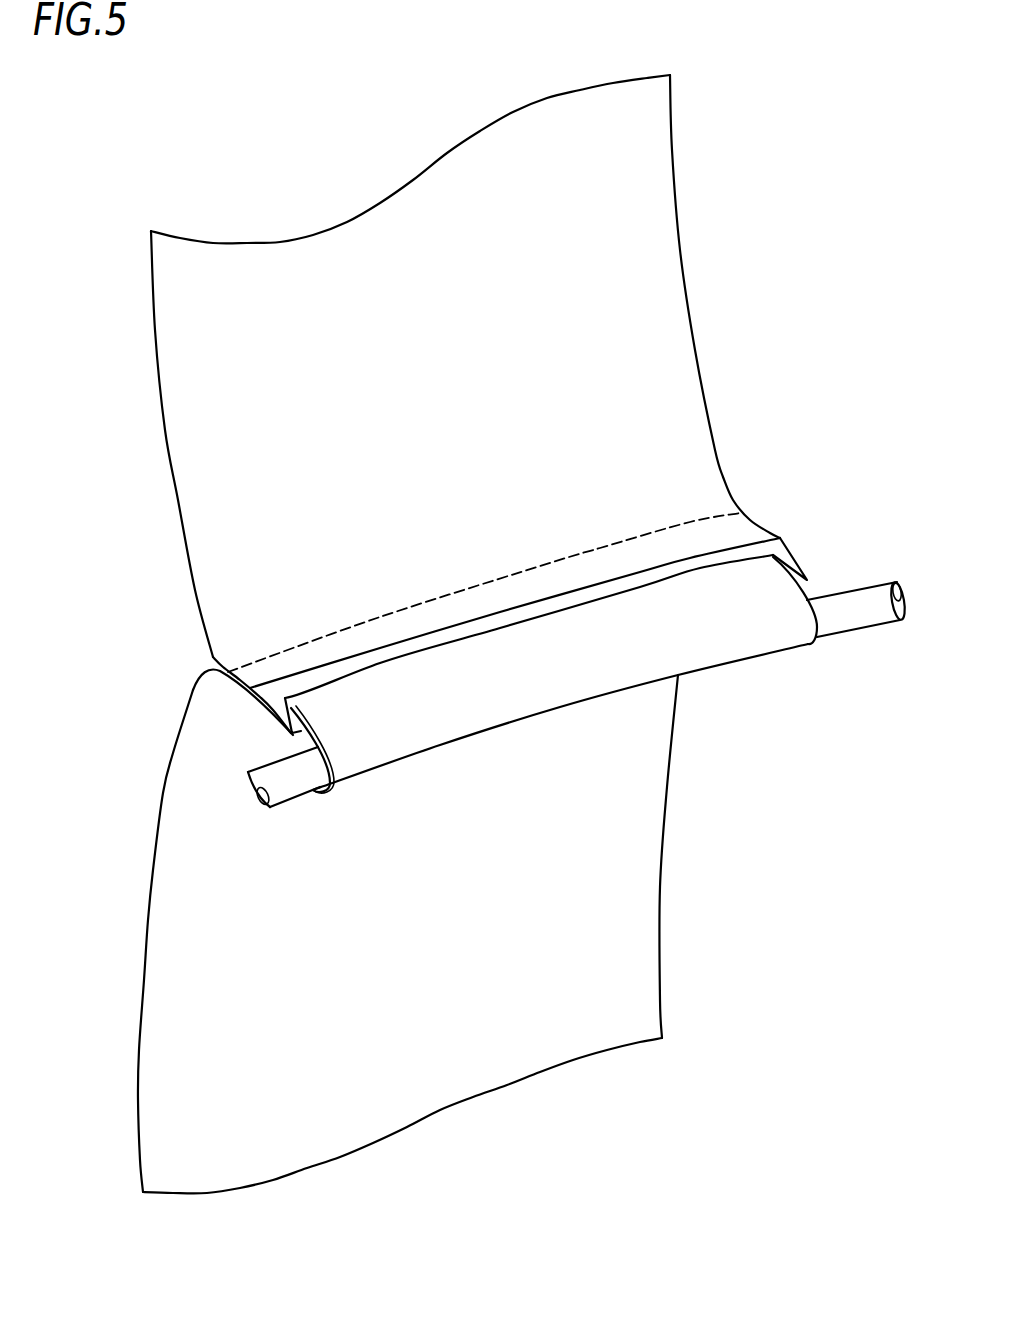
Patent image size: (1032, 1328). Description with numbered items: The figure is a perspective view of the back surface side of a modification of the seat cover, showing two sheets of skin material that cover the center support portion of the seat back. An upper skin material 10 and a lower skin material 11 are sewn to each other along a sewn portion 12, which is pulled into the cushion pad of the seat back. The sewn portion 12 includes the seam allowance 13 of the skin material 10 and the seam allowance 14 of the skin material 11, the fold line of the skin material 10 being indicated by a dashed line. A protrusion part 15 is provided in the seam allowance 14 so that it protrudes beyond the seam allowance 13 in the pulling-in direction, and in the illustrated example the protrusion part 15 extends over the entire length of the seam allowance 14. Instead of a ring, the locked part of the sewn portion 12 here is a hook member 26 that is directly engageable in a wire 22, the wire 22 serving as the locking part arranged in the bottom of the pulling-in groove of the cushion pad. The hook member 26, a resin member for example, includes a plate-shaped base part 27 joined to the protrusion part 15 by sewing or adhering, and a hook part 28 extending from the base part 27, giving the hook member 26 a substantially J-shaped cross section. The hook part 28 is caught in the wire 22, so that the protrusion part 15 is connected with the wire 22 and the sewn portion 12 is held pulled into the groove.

The skin material 10 is at (375, 223).
The skin material 11 is at (457, 1102).
The sewn portion 12 is at (217, 665).
The seam allowance 13 is at (767, 532).
The seam allowance 14 is at (330, 707).
The protrusion part 15 is at (797, 563).
The wire 22 is at (853, 613).
The hook member 26 is at (35, 817).
The base part 27 is at (286, 703).
The hook part 28 is at (370, 760).